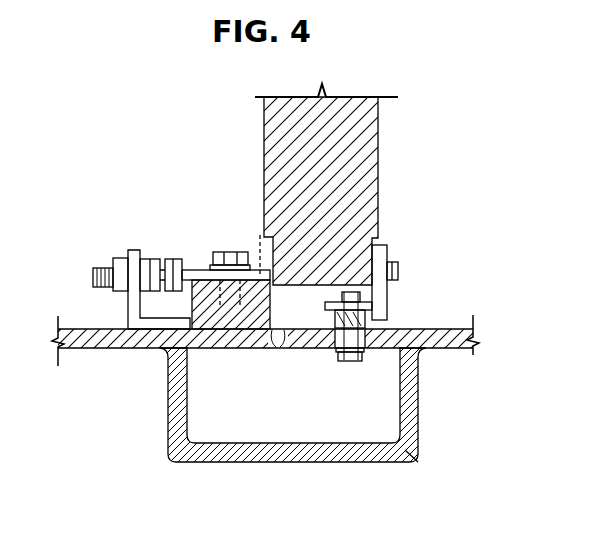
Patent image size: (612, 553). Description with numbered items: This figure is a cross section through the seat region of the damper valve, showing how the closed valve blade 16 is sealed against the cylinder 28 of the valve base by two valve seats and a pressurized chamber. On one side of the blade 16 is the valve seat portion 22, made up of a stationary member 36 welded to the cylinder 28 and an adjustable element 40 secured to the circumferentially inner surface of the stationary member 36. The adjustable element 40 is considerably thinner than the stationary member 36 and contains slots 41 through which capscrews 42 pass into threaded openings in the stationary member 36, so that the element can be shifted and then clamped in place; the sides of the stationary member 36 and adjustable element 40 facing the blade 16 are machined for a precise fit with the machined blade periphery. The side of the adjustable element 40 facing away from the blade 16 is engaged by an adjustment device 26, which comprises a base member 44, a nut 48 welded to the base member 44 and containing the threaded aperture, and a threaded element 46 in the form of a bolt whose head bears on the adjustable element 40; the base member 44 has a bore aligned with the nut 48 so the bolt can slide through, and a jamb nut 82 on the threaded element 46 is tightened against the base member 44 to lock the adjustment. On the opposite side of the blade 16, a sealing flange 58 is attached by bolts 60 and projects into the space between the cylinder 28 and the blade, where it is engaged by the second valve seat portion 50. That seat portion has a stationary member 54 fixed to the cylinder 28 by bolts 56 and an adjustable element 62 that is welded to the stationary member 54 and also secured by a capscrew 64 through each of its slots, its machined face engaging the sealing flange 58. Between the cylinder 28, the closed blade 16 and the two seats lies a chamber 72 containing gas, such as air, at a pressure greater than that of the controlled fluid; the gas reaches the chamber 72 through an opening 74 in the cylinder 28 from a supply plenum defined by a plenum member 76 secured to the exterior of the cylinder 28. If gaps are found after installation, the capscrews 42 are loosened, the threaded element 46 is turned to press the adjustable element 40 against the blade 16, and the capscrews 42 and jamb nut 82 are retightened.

The valve blade 16 is at (378, 175).
The valve seat portion 22 is at (224, 250).
The adjustment device 26 is at (108, 297).
The cylinder 28 is at (272, 377).
The stationary member 36 is at (168, 355).
The adjustable element 40 is at (202, 268).
The slots 41 is at (249, 252).
The capscrews 42 is at (236, 255).
The base member 44 is at (122, 350).
The threaded element 46 is at (159, 258).
The nut 48 is at (120, 258).
The valve seat portion 50 is at (323, 305).
The stationary member 54 is at (340, 352).
The bolts 56 is at (348, 363).
The sealing flange 58 is at (387, 300).
The bolts 60 is at (398, 270).
The adjustable element 62 is at (352, 312).
The capscrew 64 is at (418, 420).
The chamber 72 is at (322, 338).
The opening 74 is at (278, 344).
The plenum member 76 is at (418, 405).
The jamb nut 82 is at (150, 258).